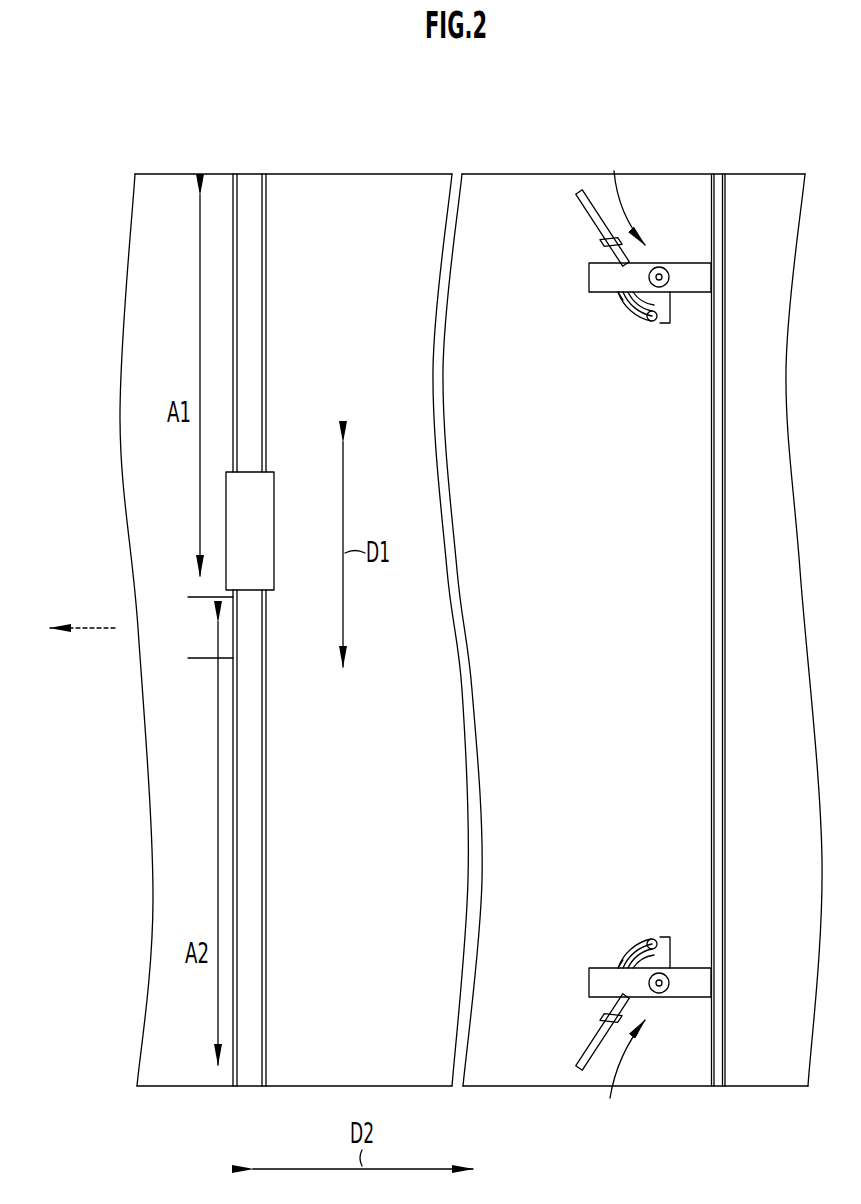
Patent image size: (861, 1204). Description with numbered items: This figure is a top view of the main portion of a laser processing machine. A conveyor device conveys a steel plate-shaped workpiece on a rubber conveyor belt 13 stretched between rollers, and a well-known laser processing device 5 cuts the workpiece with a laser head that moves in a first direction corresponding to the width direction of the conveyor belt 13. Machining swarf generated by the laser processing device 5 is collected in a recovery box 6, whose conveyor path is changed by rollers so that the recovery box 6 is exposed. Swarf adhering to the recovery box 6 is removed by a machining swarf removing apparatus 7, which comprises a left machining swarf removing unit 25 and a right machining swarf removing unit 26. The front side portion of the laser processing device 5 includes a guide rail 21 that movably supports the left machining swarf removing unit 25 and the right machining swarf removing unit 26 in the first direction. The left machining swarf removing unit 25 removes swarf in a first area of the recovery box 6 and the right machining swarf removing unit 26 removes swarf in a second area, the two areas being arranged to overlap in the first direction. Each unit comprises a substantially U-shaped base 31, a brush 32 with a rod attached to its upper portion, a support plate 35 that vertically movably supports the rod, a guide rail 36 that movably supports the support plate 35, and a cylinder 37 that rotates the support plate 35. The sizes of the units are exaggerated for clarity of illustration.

The laser processing device 5 is at (275, 532).
The recovery box 6 is at (245, 184).
The machining swarf removing apparatus 7 is at (650, 147).
The conveyor belt 13 is at (356, 185).
The guide rail 21 is at (712, 185).
The left machining swarf removing unit 25 is at (613, 169).
The right machining swarf removing unit 26 is at (611, 1098).
The base 31 is at (692, 282).
The brush 32 is at (659, 266).
The support plate 35 is at (667, 324).
The guide rail 36 is at (624, 306).
The cylinder 37 is at (601, 225).